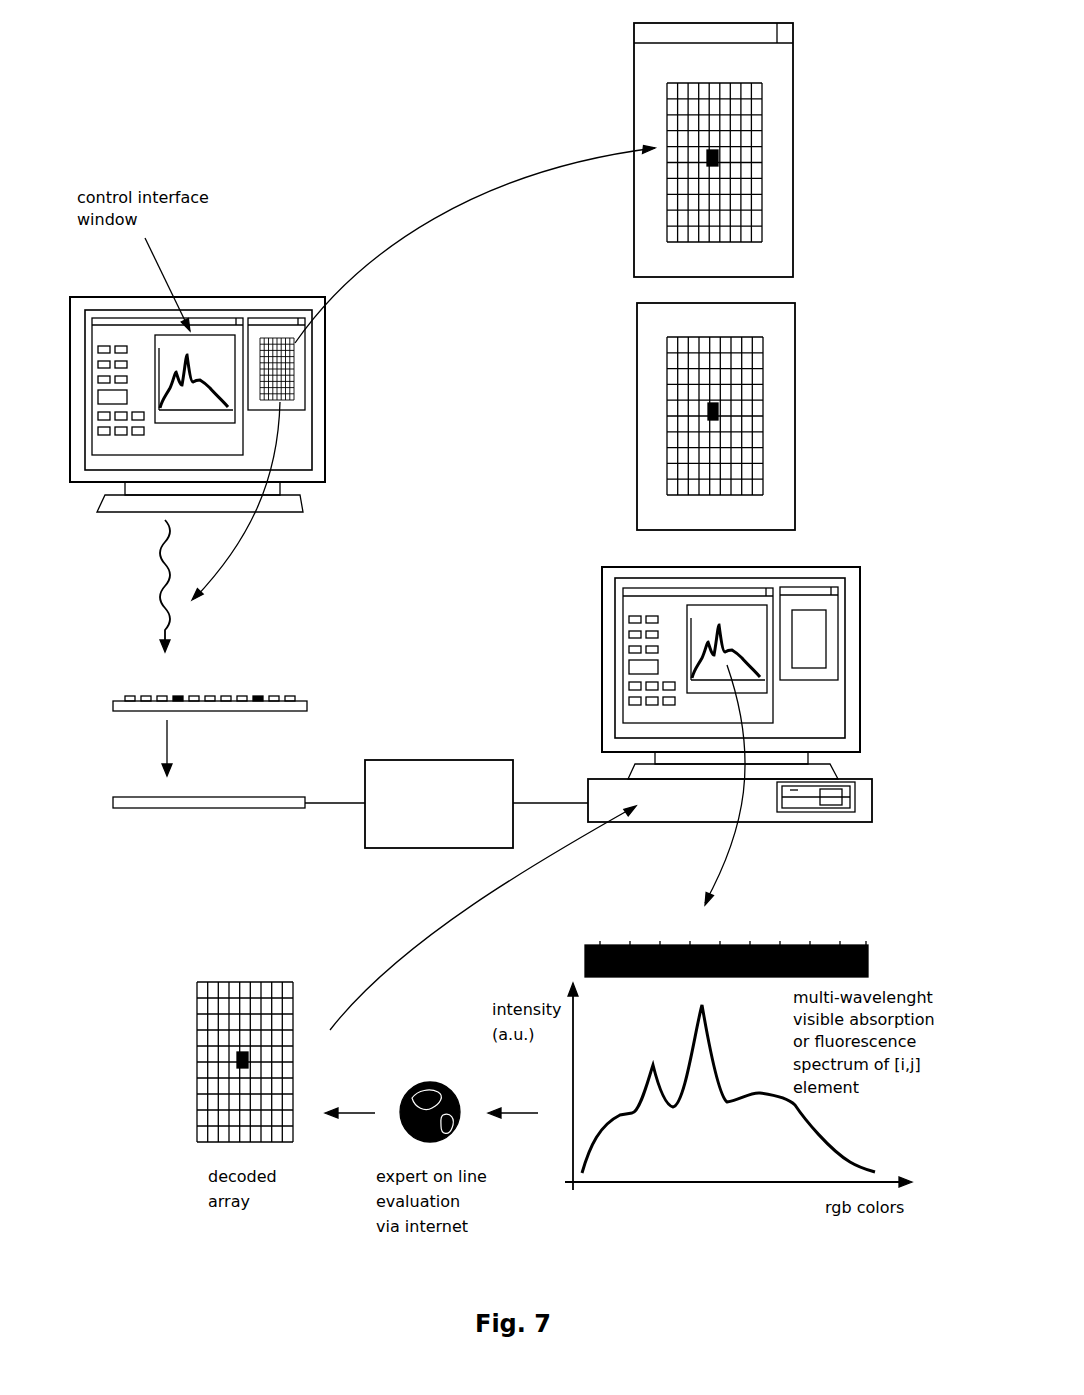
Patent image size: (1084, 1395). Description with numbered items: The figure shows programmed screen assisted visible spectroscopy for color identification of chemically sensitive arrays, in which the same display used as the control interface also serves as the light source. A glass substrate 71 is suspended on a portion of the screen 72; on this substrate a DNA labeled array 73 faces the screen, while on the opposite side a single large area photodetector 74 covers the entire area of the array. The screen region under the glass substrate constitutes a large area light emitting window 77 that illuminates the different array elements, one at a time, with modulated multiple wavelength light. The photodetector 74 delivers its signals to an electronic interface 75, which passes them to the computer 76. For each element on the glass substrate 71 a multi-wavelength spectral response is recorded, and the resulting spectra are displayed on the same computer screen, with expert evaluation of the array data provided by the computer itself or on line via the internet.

The glass substrate 71 is at (434, 609).
The screen 72 is at (250, 459).
The DNA labeled array 73 is at (205, 681).
The photodetector 74 is at (189, 801).
The electronic interface 75 is at (439, 804).
The computer 76 is at (730, 694).
The light emitting window 77 is at (283, 331).